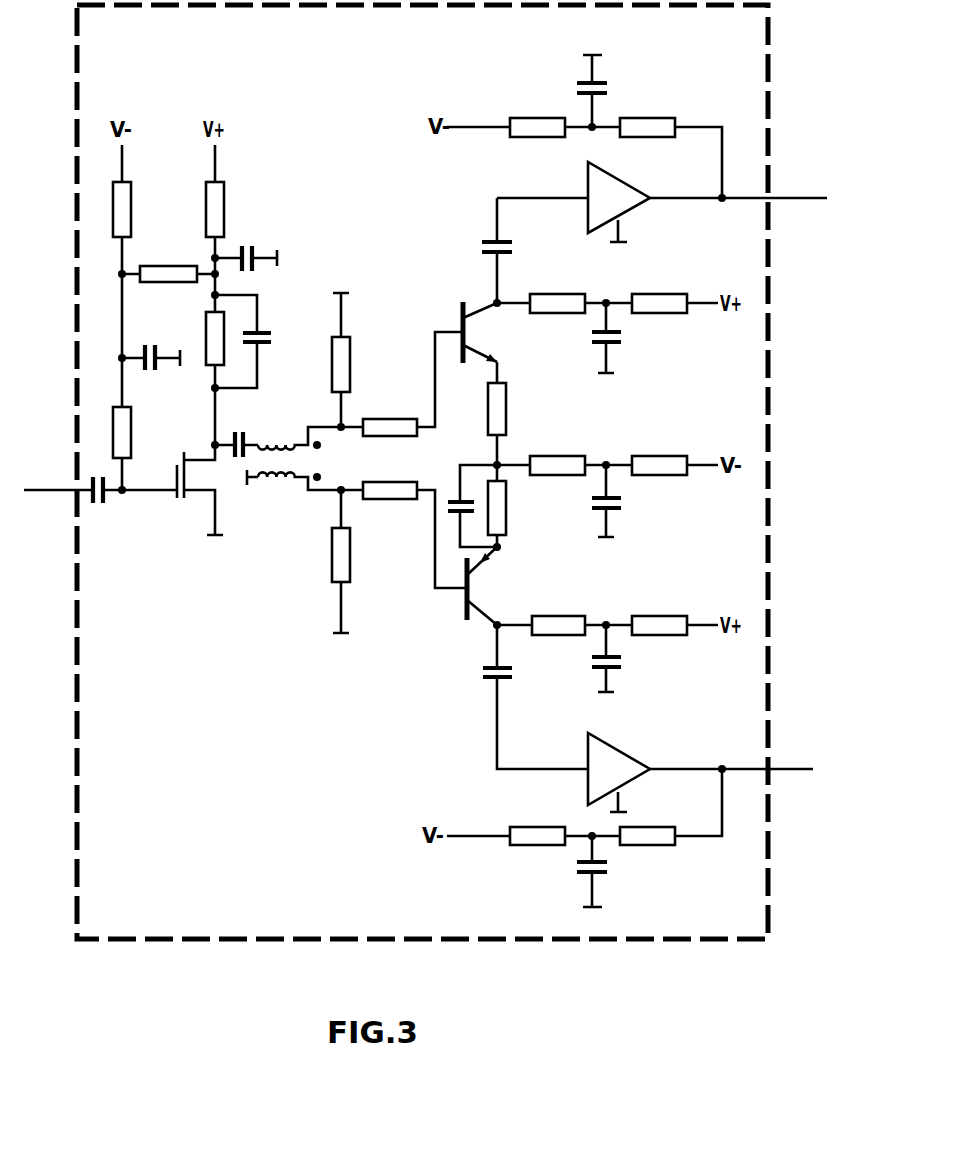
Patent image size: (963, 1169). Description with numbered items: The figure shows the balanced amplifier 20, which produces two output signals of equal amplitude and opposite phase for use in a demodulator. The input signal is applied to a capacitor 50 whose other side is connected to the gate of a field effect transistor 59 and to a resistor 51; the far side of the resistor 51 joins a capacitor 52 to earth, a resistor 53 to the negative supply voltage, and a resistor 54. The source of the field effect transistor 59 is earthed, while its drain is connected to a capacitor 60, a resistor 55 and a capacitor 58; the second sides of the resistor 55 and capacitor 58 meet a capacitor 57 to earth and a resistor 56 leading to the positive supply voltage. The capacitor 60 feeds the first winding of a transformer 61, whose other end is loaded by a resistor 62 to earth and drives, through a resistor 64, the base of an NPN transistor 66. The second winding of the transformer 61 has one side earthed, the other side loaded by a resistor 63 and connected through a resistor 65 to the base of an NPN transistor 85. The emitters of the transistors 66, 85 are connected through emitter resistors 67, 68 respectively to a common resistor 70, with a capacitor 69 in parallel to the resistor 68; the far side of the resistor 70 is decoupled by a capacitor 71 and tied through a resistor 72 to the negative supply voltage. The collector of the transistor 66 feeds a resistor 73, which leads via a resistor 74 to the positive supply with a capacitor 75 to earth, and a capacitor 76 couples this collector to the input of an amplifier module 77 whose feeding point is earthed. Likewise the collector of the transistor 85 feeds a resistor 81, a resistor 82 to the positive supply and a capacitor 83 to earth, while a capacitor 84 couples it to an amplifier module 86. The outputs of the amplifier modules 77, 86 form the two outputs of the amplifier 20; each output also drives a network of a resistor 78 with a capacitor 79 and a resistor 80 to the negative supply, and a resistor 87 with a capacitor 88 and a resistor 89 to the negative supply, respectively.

The amplifier 20 is at (773, 112).
The capacitor 50 is at (98, 505).
The resistor 51 is at (131, 432).
The capacitor 52 is at (150, 373).
The resistor 53 is at (131, 210).
The resistor 54 is at (170, 266).
The resistor 55 is at (206, 327).
The resistor 56 is at (224, 210).
The capacitor 57 is at (250, 272).
The capacitor 58 is at (271, 338).
The field effect transistor 59 is at (195, 472).
The capacitor 60 is at (238, 430).
The transformer 61 is at (283, 482).
The resistor 62 is at (362, 343).
The resistor 63 is at (332, 552).
The resistor 64 is at (386, 418).
The resistor 65 is at (390, 503).
The NPN transistor 66 is at (482, 330).
The resistor 67 is at (506, 400).
The resistor 68 is at (506, 508).
The capacitor 69 is at (448, 500).
The resistor 70 is at (565, 443).
The capacitor 71 is at (621, 505).
The resistor 72 is at (670, 443).
The resistor 73 is at (565, 281).
The resistor 74 is at (670, 281).
The capacitor 75 is at (621, 338).
The capacitor 76 is at (482, 247).
The amplifier module 77 is at (588, 178).
The resistor 78 is at (645, 118).
The capacitor 79 is at (607, 90).
The resistor 80 is at (535, 118).
The resistor 81 is at (566, 616).
The resistor 82 is at (655, 616).
The capacitor 83 is at (621, 665).
The capacitor 84 is at (483, 671).
The NPN transistor 85 is at (478, 591).
The amplifier module 86 is at (627, 752).
The resistor 87 is at (645, 846).
The capacitor 88 is at (607, 868).
The resistor 89 is at (551, 846).